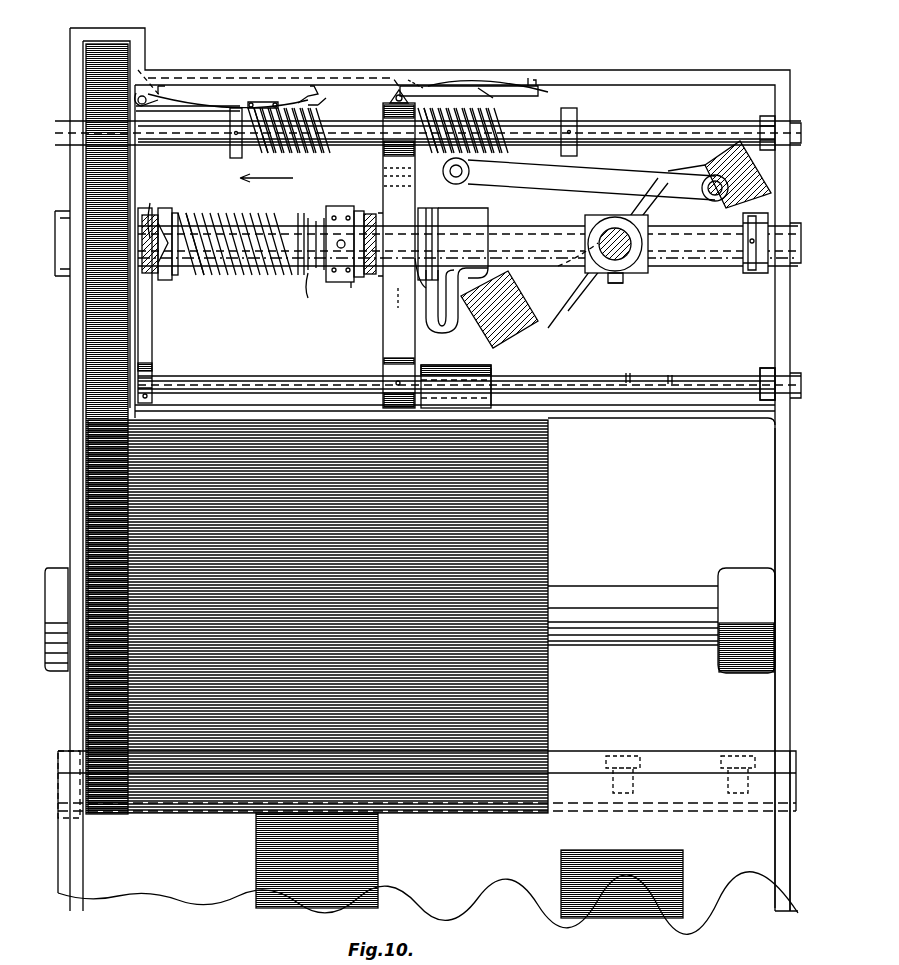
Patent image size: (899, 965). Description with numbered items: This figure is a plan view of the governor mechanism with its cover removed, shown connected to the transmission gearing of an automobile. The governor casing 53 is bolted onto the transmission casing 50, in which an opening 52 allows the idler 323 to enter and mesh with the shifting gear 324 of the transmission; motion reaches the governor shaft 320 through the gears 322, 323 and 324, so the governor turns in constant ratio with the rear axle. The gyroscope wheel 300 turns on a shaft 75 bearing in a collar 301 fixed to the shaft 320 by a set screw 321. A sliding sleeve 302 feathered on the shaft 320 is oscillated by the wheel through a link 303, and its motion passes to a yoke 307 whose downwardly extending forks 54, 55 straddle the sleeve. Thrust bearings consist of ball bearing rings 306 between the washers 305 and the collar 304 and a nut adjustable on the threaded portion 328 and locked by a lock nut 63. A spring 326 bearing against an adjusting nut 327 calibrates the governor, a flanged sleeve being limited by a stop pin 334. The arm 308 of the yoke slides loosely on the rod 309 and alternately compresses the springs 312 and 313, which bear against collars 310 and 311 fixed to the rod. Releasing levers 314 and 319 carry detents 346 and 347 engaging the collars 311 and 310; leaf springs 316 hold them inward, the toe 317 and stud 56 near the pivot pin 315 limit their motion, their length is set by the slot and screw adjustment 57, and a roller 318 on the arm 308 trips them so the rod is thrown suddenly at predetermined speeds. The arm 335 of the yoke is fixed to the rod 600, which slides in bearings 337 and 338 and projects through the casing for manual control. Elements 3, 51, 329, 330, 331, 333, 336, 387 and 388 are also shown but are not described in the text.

The frame plate 3 is at (711, 668).
The transmission casing 50 is at (770, 814).
The rack 51 is at (672, 890).
The opening 52 is at (427, 781).
The governor casing 53 is at (770, 530).
The fork 54 is at (400, 300).
The fork 55 is at (399, 255).
The stud 56 is at (152, 78).
The slot and screw adjustment 57 is at (272, 85).
The lock nut 63 is at (343, 276).
The shaft 75 is at (575, 253).
The gyroscope wheel 300 is at (564, 263).
The collar 301 is at (618, 270).
The sliding sleeve 302 is at (520, 225).
The link 303 is at (640, 166).
The collar 304 is at (430, 212).
The washers 305 is at (372, 190).
The ball bearing rings 306 is at (407, 290).
The yoke 307 is at (408, 337).
The arm 308 is at (402, 145).
The rod 309 is at (696, 118).
The collar 310 is at (565, 108).
The collar 311 is at (239, 142).
The spring 312 is at (486, 142).
The spring 313 is at (289, 142).
The releasing lever 314 is at (300, 85).
The pivot pin 315 is at (170, 95).
The leaf springs 316 is at (250, 92).
The toe 317 is at (135, 80).
The roller 318 is at (385, 90).
The releasing lever 319 is at (405, 80).
The shaft 320 is at (207, 272).
The set screw 321 is at (607, 276).
The gear 322 is at (105, 322).
The idler 323 is at (540, 510).
The shifting gear 324 is at (370, 845).
The spring 326 is at (255, 272).
The adjusting nut 327 is at (325, 198).
The threaded portion 328 is at (308, 295).
The collar 329 is at (165, 205).
The fork 330 is at (158, 195).
The collar 331 is at (158, 272).
The bar 333 is at (144, 290).
The stop pin 334 is at (158, 206).
The arm 335 is at (384, 350).
The block 336 is at (388, 374).
The bearing 337 is at (483, 357).
The bearing 338 is at (750, 362).
The detent 346 is at (225, 75).
The detent 347 is at (475, 78).
The lower shaft 387 is at (225, 358).
The block 388 is at (146, 355).
The rod 600 is at (590, 358).